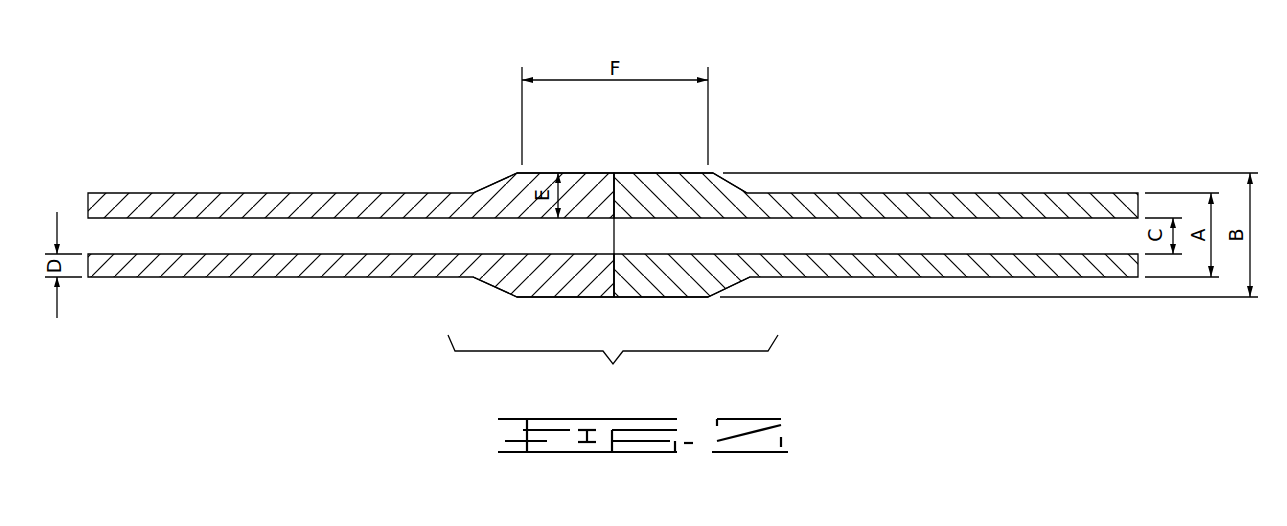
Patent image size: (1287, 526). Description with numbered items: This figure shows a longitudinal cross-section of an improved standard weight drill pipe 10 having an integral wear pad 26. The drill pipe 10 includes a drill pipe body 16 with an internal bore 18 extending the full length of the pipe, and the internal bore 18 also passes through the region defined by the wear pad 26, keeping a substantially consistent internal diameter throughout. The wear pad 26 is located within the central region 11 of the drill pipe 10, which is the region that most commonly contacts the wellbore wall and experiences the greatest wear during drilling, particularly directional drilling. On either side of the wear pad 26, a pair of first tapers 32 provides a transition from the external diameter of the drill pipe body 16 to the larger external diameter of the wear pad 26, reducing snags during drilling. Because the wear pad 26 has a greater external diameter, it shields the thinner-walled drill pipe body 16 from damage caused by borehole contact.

The standard weight drill pipe 10 is at (613, 160).
The central region 11 is at (613, 363).
The drill pipe body 16 is at (201, 193).
The internal bore 18 is at (173, 254).
The integral wear pad 26 is at (598, 173).
The first tapers 32 is at (493, 184).